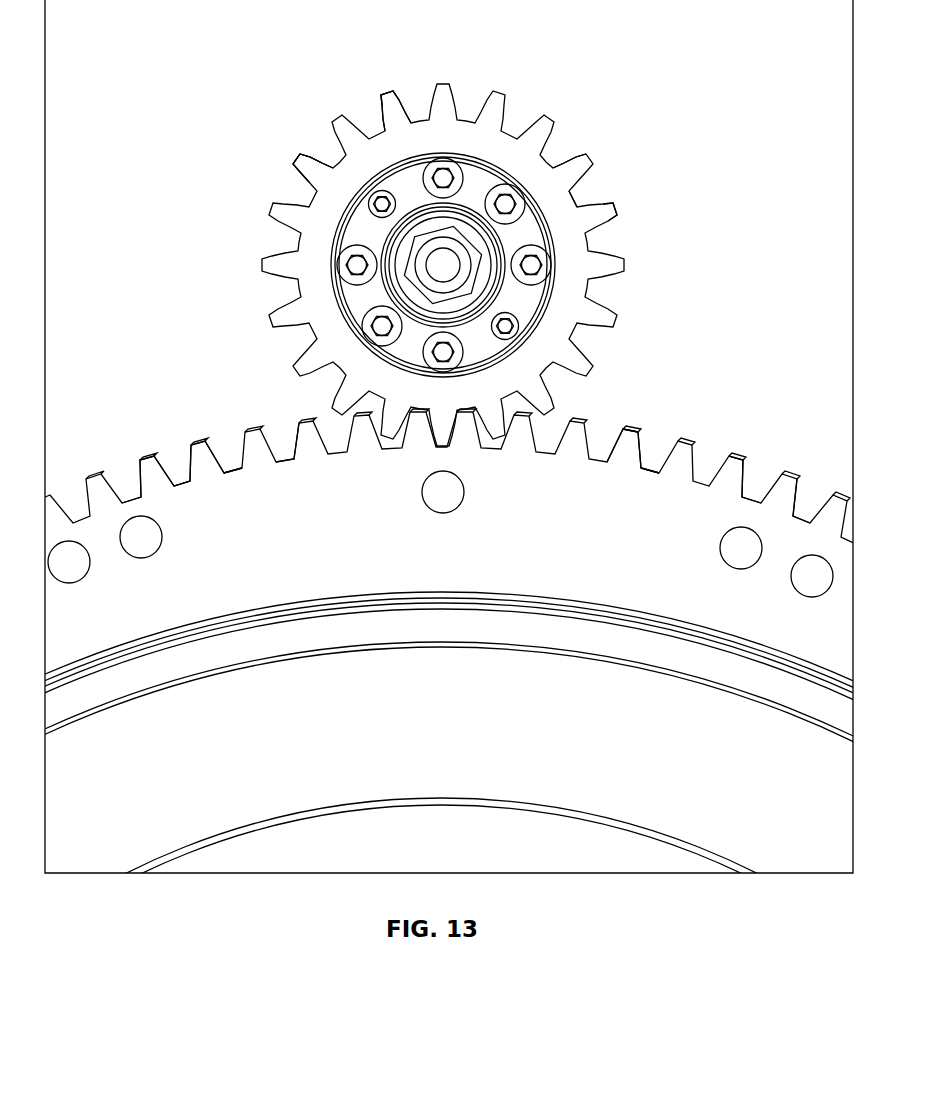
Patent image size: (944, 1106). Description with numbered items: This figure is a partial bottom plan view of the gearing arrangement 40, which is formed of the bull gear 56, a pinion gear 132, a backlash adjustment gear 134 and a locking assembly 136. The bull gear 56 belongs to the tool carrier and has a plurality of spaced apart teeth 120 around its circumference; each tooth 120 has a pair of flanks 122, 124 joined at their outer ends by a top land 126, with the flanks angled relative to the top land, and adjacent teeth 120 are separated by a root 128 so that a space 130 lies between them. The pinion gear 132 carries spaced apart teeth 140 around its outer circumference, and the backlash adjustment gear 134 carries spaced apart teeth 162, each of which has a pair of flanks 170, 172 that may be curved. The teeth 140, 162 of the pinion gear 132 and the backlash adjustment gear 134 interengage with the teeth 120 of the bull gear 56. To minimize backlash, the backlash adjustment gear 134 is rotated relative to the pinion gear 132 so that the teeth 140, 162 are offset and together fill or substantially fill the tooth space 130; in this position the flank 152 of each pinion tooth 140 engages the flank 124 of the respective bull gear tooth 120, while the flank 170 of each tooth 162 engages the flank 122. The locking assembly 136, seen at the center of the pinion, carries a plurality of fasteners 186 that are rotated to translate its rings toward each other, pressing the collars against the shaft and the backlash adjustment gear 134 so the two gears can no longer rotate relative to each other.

The gearing arrangement 40 is at (766, 255).
The bull gear 56 is at (697, 533).
The teeth 120 is at (147, 468).
The flank 122 is at (187, 448).
The flank 124 is at (217, 446).
The top land 126 is at (194, 438).
The root 128 is at (231, 470).
The space 130 is at (284, 445).
The pinion gear 132 is at (560, 135).
The backlash adjustment gear 134 is at (562, 220).
The locking assembly 136 is at (483, 182).
The teeth 140 is at (405, 100).
The flank 152 is at (318, 152).
The teeth 162 is at (393, 107).
The flank 170 is at (300, 168).
The flank 172 is at (308, 150).
The fasteners 186 is at (343, 268).